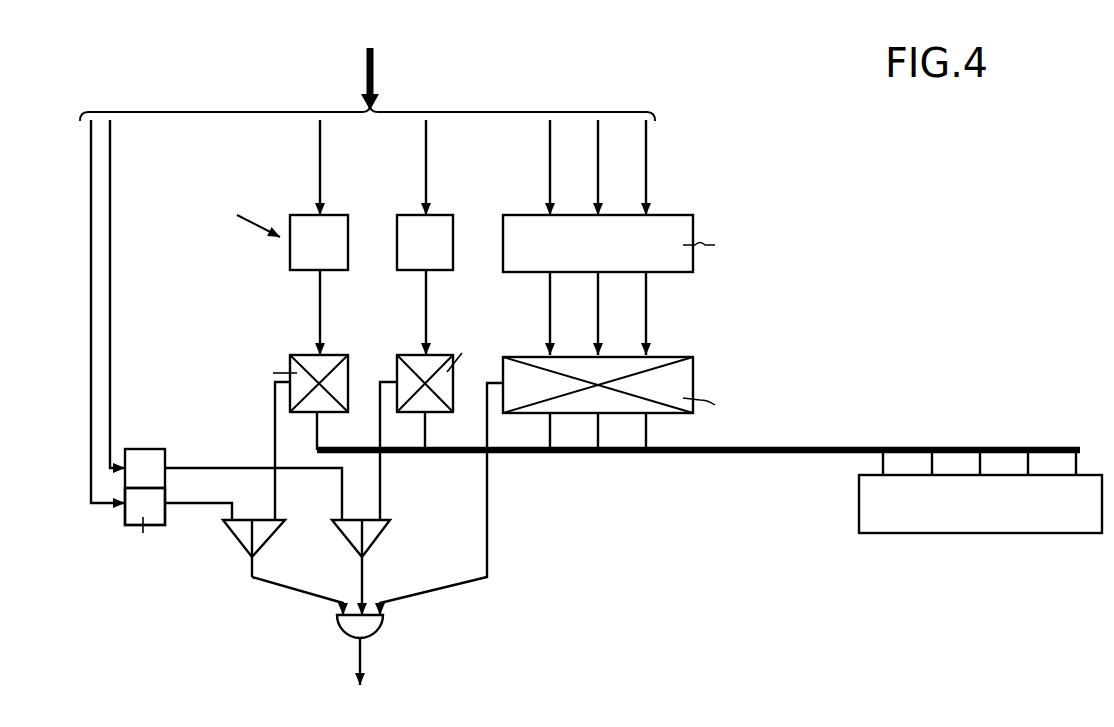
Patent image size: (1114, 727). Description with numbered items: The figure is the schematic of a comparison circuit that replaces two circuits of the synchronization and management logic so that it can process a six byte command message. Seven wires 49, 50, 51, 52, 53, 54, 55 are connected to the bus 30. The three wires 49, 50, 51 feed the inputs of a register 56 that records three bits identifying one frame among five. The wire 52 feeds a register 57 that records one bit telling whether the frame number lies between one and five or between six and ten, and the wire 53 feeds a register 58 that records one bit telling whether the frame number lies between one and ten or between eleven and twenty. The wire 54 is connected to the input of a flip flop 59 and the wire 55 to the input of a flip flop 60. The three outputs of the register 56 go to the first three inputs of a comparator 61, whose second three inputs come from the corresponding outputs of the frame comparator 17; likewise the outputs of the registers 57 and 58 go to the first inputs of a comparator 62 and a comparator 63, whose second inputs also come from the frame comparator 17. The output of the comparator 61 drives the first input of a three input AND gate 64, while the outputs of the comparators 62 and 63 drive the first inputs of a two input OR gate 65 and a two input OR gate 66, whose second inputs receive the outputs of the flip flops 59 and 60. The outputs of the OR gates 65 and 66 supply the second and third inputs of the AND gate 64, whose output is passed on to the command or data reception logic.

The bus 30 is at (376, 66).
The wire 55 is at (90, 165).
The wire 54 is at (111, 164).
The wire 53 is at (319, 165).
The wire 52 is at (425, 165).
The wire 51 is at (549, 165).
The wire 50 is at (597, 166).
The wire 49 is at (648, 164).
The register 58 is at (285, 268).
The register 57 is at (435, 278).
The register 56 is at (656, 285).
The comparator 63 is at (290, 365).
The comparator 62 is at (397, 365).
The comparator 61 is at (695, 388).
The flip flop 59 is at (165, 452).
The flip flop 60 is at (129, 525).
The two input OR gate 66 is at (230, 544).
The two input OR gate 65 is at (385, 538).
The three input AND gate 64 is at (385, 628).
The frame comparator 17 is at (900, 535).